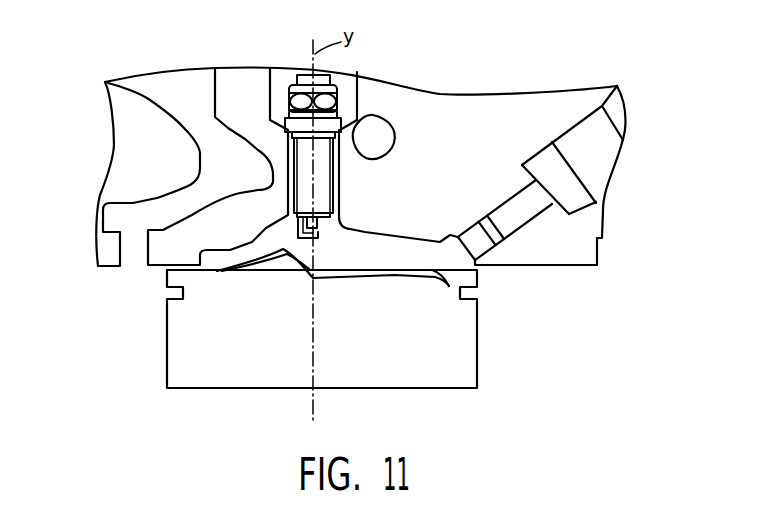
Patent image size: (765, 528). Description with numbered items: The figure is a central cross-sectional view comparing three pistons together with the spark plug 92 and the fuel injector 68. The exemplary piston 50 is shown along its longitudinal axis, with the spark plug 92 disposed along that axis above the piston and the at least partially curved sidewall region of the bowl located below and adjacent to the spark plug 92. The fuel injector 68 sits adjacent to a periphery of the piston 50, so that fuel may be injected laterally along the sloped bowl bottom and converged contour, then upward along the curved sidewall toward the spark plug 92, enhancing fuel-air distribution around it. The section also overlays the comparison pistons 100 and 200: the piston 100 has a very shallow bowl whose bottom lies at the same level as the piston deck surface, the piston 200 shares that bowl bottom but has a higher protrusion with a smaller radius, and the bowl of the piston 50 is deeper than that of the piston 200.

The piston 100 is at (240, 245).
The spark plug 92 is at (326, 192).
The fuel injector 68 is at (583, 131).
The piston 200 is at (308, 260).
The piston 50 is at (390, 288).